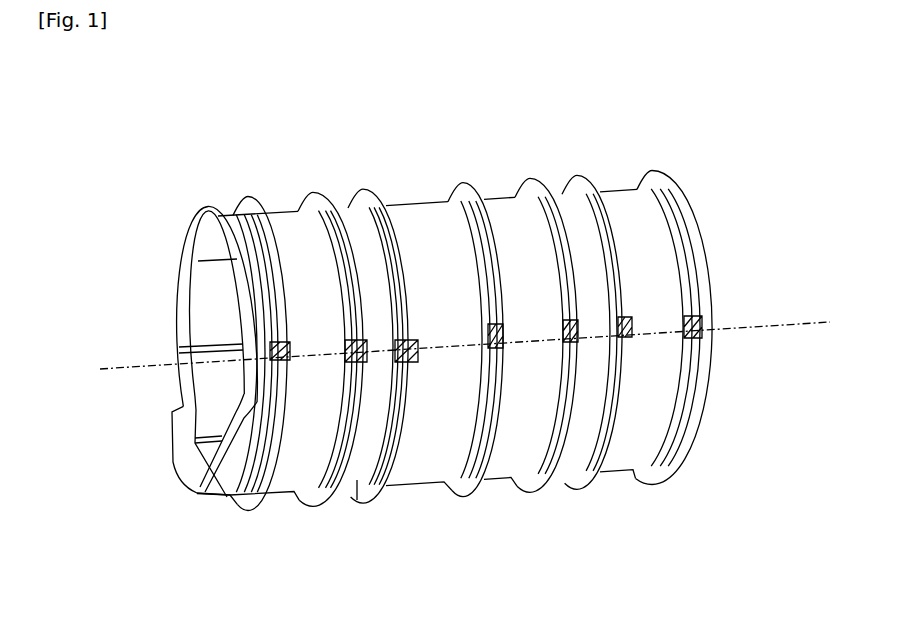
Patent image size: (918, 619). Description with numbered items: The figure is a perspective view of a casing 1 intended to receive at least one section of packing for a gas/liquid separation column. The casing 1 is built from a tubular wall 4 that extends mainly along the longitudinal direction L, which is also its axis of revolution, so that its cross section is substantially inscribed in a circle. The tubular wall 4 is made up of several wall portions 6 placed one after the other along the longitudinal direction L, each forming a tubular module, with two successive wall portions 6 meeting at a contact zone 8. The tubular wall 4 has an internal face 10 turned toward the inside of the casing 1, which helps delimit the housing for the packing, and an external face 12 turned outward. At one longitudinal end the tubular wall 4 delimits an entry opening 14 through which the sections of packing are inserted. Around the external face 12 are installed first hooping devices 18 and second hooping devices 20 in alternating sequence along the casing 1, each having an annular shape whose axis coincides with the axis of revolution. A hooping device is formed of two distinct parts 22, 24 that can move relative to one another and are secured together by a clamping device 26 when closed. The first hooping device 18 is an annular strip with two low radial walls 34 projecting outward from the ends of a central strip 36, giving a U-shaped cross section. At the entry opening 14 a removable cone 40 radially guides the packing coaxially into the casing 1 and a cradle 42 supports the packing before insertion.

The casing 1 is at (133, 211).
The tubular wall 4 is at (692, 427).
The wall portions 6 is at (366, 217).
The contact zone 8 is at (423, 203).
The internal face 10 is at (203, 303).
The external face 12 is at (313, 243).
The entry opening 14 is at (185, 472).
The first hooping device 18 is at (330, 508).
The second hooping device 20 is at (247, 197).
The part 22 is at (233, 249).
The part 24 is at (247, 513).
The clamping device 26 is at (177, 322).
The low radial walls 34 is at (302, 511).
The central strip 36 is at (357, 495).
The removable cone 40 is at (180, 378).
The cradle 42 is at (198, 490).
The longitudinal direction L is at (733, 325).